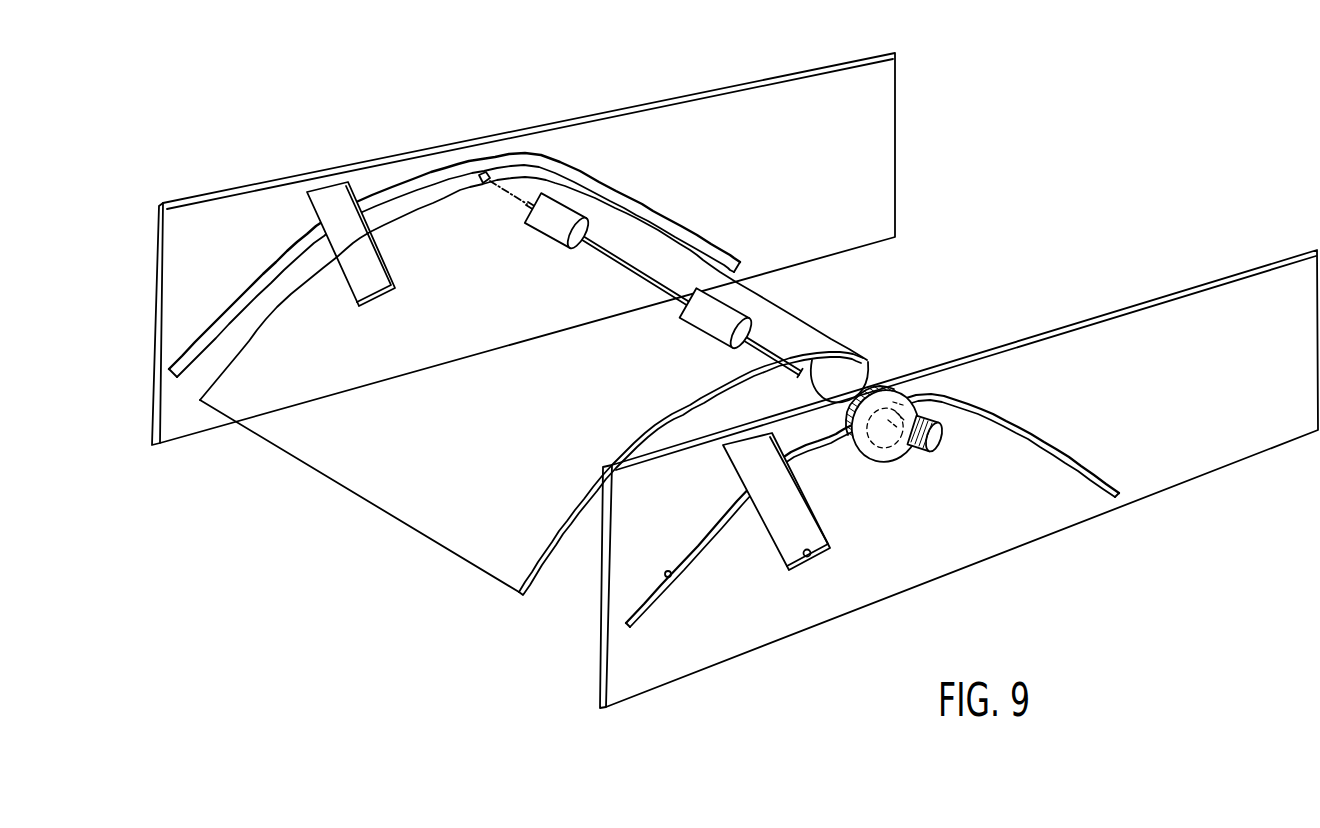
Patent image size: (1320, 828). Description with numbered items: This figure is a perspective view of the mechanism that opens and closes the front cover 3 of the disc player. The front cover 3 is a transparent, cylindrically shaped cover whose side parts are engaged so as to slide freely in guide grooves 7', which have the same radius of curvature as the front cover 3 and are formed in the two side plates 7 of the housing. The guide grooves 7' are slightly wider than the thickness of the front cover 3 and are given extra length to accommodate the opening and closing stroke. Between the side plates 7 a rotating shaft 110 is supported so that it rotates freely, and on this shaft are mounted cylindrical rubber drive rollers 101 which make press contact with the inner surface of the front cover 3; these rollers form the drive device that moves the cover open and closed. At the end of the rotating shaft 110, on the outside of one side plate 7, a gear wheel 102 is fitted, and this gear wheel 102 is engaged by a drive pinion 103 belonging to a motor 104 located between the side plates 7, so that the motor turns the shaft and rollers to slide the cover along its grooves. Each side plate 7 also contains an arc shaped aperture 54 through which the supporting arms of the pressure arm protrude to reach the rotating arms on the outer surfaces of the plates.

The side plate 7 is at (735, 380).
The guide groove 7' is at (644, 390).
The arc shaped aperture 54 is at (331, 187).
The front cover 3 is at (387, 494).
The rubber drive roller 101 is at (548, 222).
The rotating shaft 110 is at (607, 258).
The motor 104 is at (871, 376).
The gear wheel 102 is at (876, 460).
The drive pinion 103 is at (937, 443).